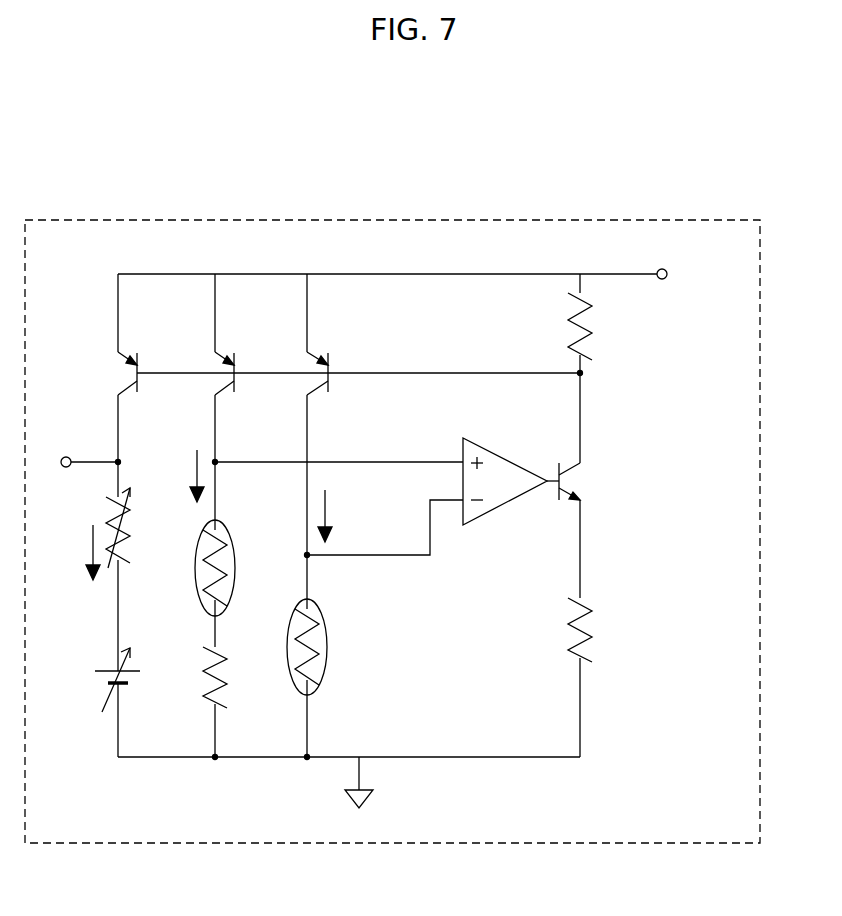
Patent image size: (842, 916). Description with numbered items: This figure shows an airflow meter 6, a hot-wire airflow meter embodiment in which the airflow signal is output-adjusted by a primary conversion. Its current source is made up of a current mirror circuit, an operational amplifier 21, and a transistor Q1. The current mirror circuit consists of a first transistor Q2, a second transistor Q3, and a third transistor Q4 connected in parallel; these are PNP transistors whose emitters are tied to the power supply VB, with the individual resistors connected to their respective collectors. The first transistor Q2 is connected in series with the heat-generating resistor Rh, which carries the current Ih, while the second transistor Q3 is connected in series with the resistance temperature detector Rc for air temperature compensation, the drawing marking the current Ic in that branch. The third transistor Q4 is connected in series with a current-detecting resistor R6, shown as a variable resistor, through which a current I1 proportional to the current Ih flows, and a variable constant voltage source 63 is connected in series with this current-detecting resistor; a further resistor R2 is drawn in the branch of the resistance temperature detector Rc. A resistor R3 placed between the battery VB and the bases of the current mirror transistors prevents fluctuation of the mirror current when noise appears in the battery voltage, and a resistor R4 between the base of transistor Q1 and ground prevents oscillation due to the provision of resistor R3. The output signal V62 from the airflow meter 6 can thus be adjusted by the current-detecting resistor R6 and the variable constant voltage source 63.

The airflow meter 6 is at (760, 328).
The operational amplifier 21 is at (497, 507).
The variable constant voltage source 63 is at (131, 683).
The transistor Q1 is at (584, 481).
The first transistor Q2 is at (332, 362).
The second transistor Q3 is at (237, 362).
The third transistor Q4 is at (140, 362).
The resistor R2 is at (227, 698).
The resistor R3 is at (596, 330).
The resistor R4 is at (596, 631).
The variable resistor R6 is at (131, 551).
The resistance temperature detector Rc is at (236, 561).
The heat-generating resistor Rh is at (328, 657).
The power supply VB is at (679, 274).
The output signal V62 is at (82, 449).
The current I1 is at (84, 552).
The current Ic is at (186, 476).
The current Ih is at (335, 516).